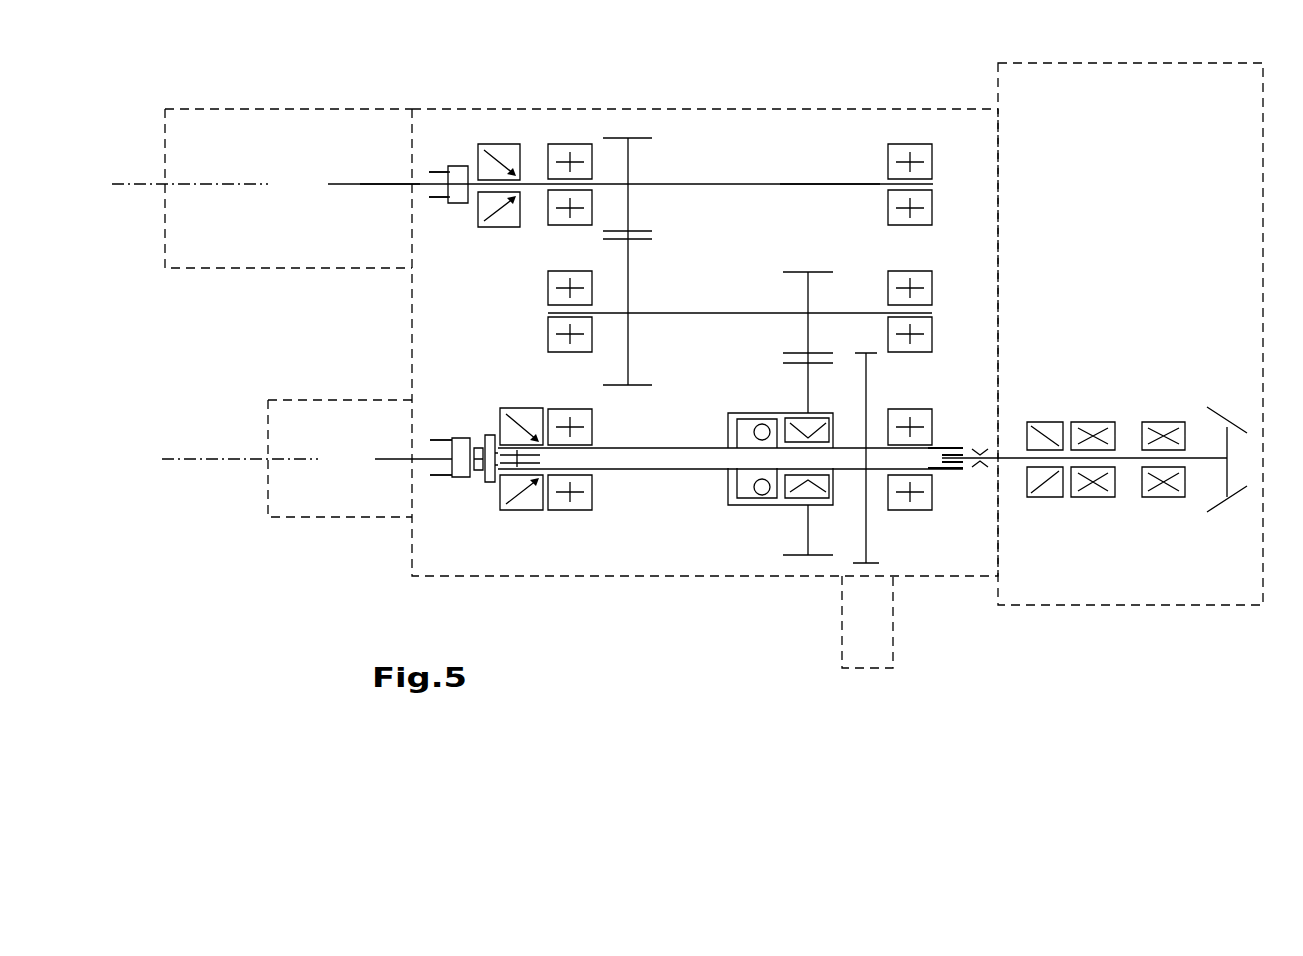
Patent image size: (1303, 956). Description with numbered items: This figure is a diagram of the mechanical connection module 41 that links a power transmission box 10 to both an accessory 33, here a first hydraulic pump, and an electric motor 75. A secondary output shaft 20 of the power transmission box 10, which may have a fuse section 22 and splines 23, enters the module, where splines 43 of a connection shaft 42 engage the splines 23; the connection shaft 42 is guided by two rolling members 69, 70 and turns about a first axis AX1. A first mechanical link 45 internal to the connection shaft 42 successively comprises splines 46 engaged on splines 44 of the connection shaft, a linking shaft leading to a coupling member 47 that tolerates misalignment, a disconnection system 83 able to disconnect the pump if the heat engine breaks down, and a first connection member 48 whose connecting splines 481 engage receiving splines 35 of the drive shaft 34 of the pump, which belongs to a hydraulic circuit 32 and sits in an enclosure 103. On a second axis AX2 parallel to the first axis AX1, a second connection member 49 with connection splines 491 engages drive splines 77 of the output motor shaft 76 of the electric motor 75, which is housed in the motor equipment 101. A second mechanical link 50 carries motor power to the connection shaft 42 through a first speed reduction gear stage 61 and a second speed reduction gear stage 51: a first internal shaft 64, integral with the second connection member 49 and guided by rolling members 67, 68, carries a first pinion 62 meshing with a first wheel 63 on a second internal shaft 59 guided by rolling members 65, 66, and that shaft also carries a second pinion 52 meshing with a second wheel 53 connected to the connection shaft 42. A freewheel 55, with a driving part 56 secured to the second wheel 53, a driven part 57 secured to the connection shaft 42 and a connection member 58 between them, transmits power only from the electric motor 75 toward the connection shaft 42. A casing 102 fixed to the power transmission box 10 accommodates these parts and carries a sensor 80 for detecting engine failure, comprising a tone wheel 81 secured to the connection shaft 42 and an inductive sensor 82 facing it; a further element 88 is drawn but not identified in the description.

The power transmission box 10 is at (1142, 605).
The secondary output shaft 20 is at (1200, 458).
The fuse section 22 is at (978, 474).
The splines 23 is at (950, 445).
The hydraulic circuit 32 is at (297, 493).
The accessory 33 is at (322, 474).
The drive shaft 34 is at (400, 457).
The receiving splines 35 is at (437, 476).
The mechanical connection module 41 is at (605, 577).
The connection shaft 42 is at (697, 471).
The splines 43 is at (950, 470).
The splines 44 is at (516, 465).
The first mechanical link 45 is at (490, 486).
The splines 46 is at (527, 470).
The coupling member 47 is at (489, 435).
The first connection member 48 is at (379, 349).
The connecting splines 481 is at (455, 222).
The second connection member 49 is at (475, 142).
The connection splines 491 is at (458, 166).
The second mechanical link 50 is at (705, 337).
The second speed reduction gear stage 51 is at (822, 262).
The second pinion 52 is at (812, 288).
The second wheel 53 is at (805, 373).
The freewheel 55 is at (747, 454).
The driving part 56 is at (793, 510).
The driven part 57 is at (737, 438).
The connection member 58 is at (770, 413).
The second internal shaft 59 is at (698, 312).
The first speed reduction gear stage 61 is at (628, 131).
The first pinion 62 is at (630, 152).
The first wheel 63 is at (630, 291).
The first internal shaft 64 is at (843, 184).
The rolling member 65 is at (920, 272).
The rolling member 66 is at (548, 296).
The rolling member 67 is at (561, 144).
The rolling member 68 is at (915, 144).
The rolling member 69 is at (588, 409).
The rolling member 70 is at (920, 409).
The electric motor 75 is at (276, 198).
The output motor shaft 76 is at (385, 186).
The drive splines 77 is at (438, 164).
The sensor 80 is at (881, 533).
The tone wheel 81 is at (868, 530).
The inductive sensor 82 is at (838, 630).
The disconnection system 83 is at (478, 448).
The clutch housing 88 is at (754, 486).
The motor equipment 101 is at (201, 109).
The casing 102 is at (895, 109).
The enclosure 103 is at (268, 429).
The first axis AX1 is at (198, 460).
The second axis AX2 is at (128, 183).